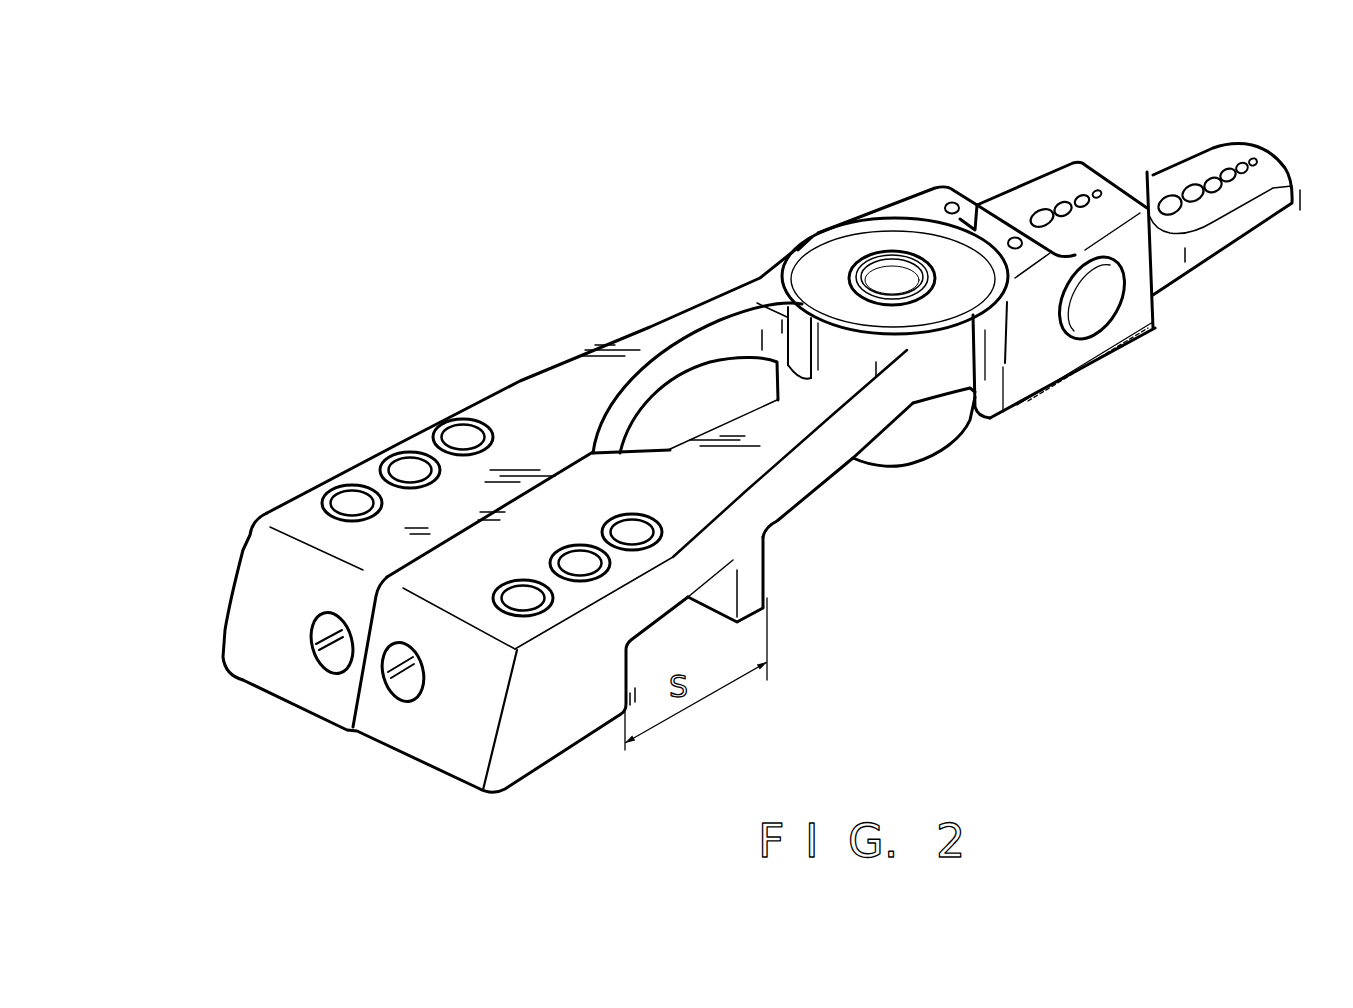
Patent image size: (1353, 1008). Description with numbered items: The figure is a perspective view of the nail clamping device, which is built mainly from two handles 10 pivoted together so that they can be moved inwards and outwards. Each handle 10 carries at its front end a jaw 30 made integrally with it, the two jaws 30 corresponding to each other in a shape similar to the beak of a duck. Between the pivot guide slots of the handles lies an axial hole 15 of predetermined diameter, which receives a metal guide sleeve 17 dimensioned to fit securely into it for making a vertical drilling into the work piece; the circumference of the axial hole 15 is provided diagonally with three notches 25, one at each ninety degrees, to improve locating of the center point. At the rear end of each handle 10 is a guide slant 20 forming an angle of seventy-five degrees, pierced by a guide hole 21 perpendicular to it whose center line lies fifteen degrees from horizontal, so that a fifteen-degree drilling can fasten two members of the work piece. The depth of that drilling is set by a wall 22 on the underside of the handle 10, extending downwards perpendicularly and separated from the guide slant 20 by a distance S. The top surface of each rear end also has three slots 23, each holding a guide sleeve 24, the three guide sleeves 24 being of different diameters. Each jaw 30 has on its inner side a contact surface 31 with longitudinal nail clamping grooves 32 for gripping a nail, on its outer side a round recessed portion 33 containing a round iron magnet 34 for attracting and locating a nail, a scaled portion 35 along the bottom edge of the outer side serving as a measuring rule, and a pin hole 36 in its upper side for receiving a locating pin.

The handle 10 is at (488, 365).
The axial hole 15 is at (888, 275).
The metal guide sleeve 17 is at (855, 262).
The guide slant 20 is at (265, 558).
The guide hole 21 is at (325, 652).
The wall 22 is at (747, 562).
The slot 23 is at (352, 498).
The guide sleeve 24 is at (322, 493).
The notch 25 is at (810, 237).
The jaw 30 is at (1127, 167).
The contact surface 31 is at (1153, 215).
The nail clamping groove 32 is at (1192, 193).
The recessed portion 33 is at (1123, 290).
The round magnet 34 is at (1100, 313).
The scaled portion 35 is at (1078, 373).
The pin hole 36 is at (947, 202).